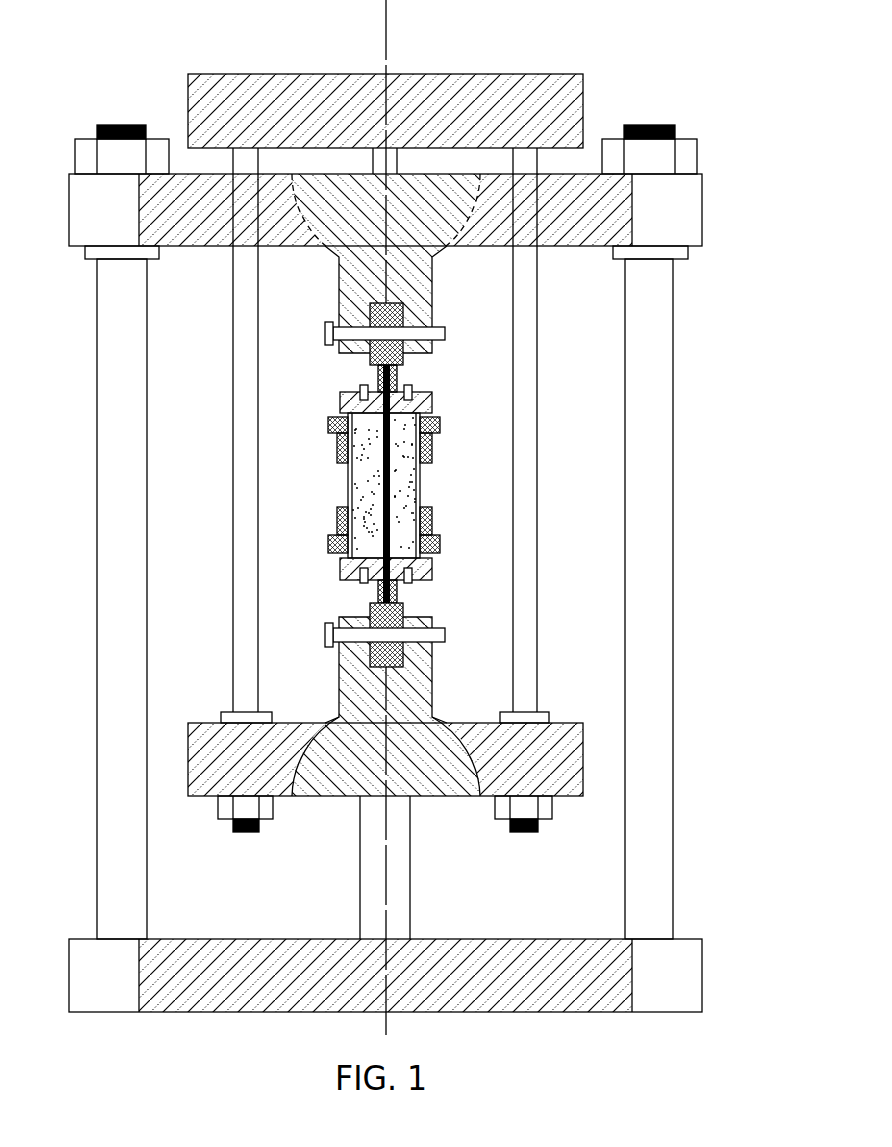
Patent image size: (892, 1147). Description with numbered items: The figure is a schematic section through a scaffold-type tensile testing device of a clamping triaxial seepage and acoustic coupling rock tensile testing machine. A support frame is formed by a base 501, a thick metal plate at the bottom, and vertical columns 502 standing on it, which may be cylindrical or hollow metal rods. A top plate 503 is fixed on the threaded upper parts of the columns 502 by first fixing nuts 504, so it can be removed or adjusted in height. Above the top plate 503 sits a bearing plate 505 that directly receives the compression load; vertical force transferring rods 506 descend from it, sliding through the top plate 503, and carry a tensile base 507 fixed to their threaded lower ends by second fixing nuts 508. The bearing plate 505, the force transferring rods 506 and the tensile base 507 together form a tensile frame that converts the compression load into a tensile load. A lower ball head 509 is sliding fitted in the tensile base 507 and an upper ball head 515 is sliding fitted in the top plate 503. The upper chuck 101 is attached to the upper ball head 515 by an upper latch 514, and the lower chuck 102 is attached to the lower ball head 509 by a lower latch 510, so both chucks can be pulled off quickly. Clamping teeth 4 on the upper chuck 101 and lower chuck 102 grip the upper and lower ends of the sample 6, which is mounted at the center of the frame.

The base 501 is at (205, 978).
The vertical column 502 is at (118, 808).
The top plate 503 is at (208, 227).
The first fixing nut 504 is at (87, 155).
The bearing plate 505 is at (457, 107).
The force transferring rod 506 is at (522, 520).
The tensile base 507 is at (545, 760).
The second fixing nut 508 is at (505, 808).
The lower ball head 509 is at (348, 772).
The lower latch 510 is at (327, 640).
The upper latch 514 is at (327, 333).
The upper ball head 515 is at (337, 217).
The upper chuck 101 is at (410, 407).
The lower chuck 102 is at (428, 570).
The clamping teeth 4 is at (433, 452).
The sample 6 is at (362, 485).